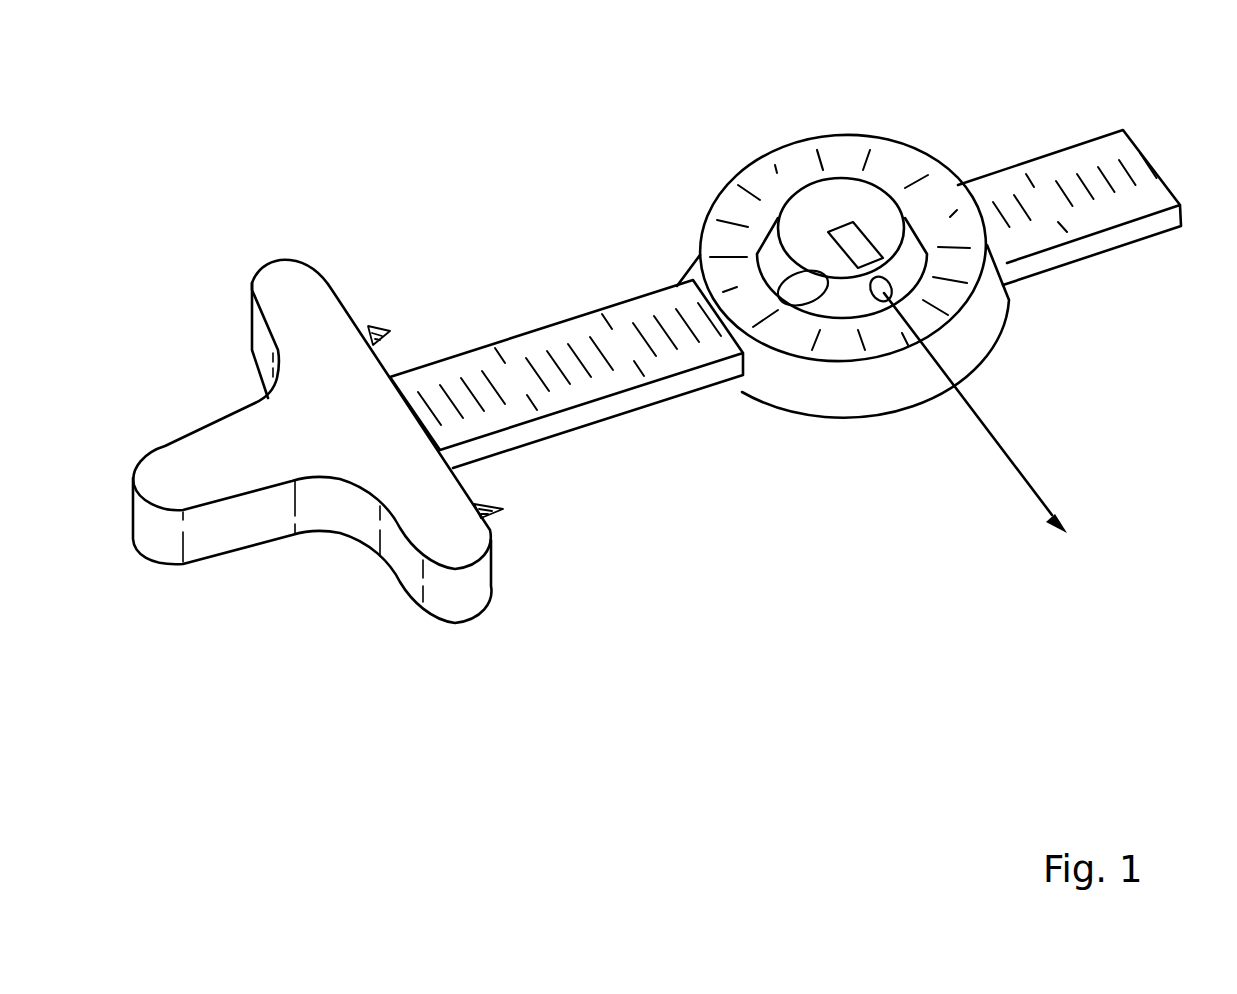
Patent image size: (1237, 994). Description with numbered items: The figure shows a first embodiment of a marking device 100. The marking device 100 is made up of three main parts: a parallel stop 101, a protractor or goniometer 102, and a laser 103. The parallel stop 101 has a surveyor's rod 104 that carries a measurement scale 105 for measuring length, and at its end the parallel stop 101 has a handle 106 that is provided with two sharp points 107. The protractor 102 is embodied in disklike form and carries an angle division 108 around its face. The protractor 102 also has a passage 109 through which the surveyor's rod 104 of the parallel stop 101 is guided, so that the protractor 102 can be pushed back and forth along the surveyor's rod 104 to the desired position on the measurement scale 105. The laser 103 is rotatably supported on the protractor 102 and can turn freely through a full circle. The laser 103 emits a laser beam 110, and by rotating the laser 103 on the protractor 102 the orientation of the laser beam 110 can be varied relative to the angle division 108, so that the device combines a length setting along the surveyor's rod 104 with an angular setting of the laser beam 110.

The marking device 100 is at (427, 190).
The parallel stop 101 is at (323, 323).
The protractor 102 is at (747, 167).
The laser 103 is at (852, 320).
The surveyor's rod 104 is at (1007, 173).
The measurement scale 105 is at (1057, 180).
The handle 106 is at (253, 513).
The sharp points 107 is at (372, 322).
The angle division 108 is at (823, 163).
The passage 109 is at (731, 383).
The laser beam 110 is at (973, 417).